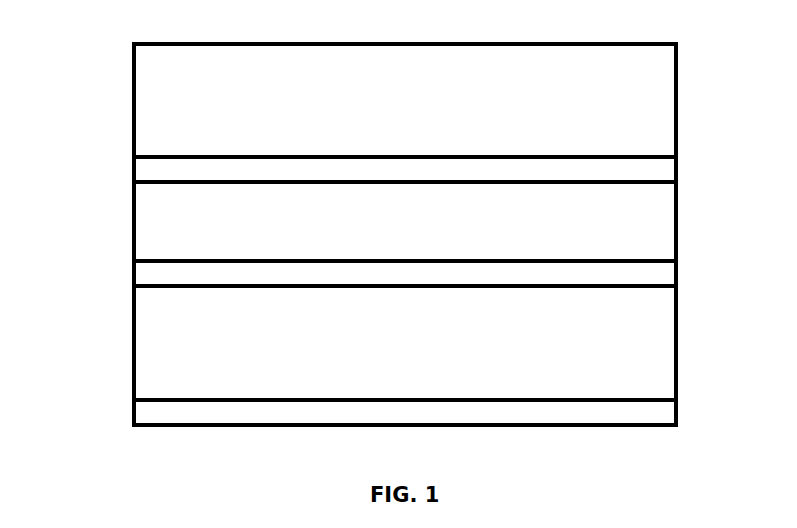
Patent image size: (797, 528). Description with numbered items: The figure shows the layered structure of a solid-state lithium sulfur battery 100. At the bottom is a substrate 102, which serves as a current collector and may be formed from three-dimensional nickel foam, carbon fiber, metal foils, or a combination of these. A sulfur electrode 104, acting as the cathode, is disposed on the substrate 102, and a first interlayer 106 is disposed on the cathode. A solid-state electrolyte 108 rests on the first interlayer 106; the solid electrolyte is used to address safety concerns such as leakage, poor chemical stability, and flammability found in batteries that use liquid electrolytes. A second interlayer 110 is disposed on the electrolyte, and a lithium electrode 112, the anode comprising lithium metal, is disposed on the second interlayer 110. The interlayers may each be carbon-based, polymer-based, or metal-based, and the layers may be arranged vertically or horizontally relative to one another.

The battery 100 is at (100, 108).
The substrate 102 is at (676, 415).
The sulfur electrode 104 is at (676, 348).
The first interlayer 106 is at (676, 280).
The solid-state electrolyte 108 is at (676, 232).
The second interlayer 110 is at (676, 173).
The lithium electrode 112 is at (676, 108).